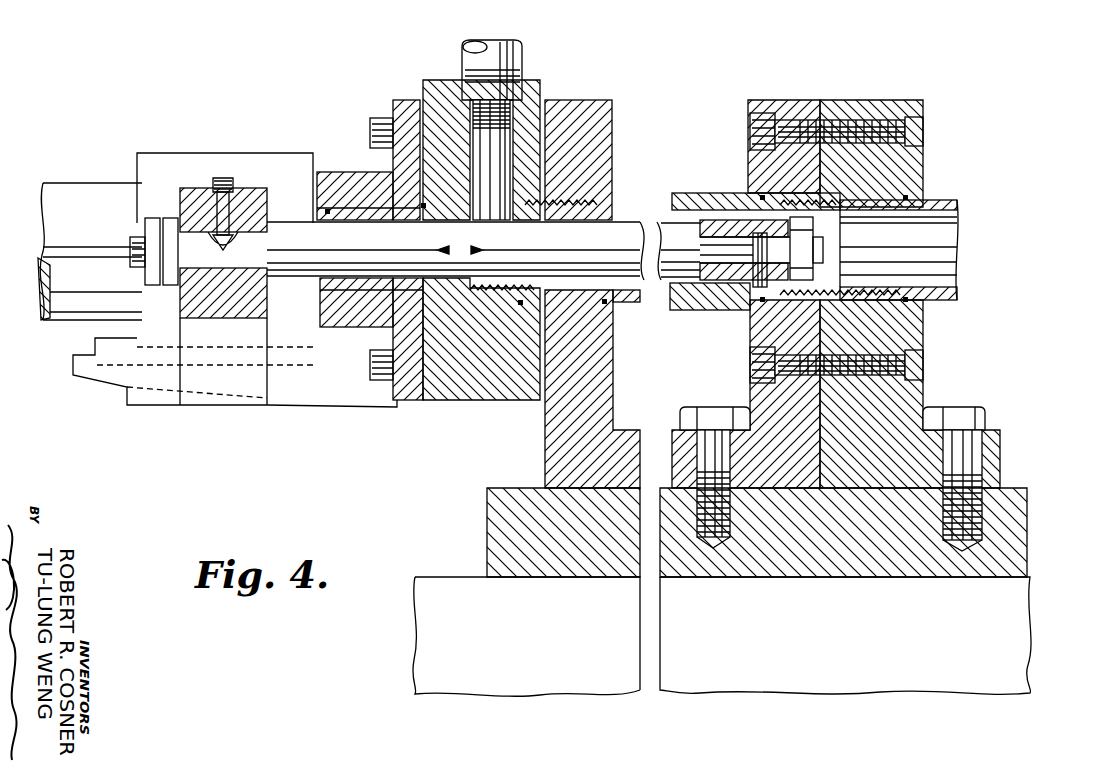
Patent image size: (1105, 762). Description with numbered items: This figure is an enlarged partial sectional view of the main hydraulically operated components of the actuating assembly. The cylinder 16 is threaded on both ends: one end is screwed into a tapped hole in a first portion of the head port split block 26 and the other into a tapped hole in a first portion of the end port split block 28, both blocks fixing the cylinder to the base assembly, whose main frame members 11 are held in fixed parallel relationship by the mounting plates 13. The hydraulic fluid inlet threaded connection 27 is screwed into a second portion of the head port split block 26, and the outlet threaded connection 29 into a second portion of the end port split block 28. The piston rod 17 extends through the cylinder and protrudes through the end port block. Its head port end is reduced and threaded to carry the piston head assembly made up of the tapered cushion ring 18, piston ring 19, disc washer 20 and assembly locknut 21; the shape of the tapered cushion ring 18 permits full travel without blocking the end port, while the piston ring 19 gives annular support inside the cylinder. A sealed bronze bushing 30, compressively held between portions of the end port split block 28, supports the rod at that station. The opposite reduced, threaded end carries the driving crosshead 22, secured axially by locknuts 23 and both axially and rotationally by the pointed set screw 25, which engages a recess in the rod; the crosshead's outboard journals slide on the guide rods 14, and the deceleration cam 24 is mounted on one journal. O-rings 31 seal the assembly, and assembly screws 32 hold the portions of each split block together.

The main frame members 11 is at (624, 675).
The mounting plates 13 is at (500, 535).
The guide rods 14 is at (92, 190).
The cylinder 16 is at (656, 268).
The piston rod 17 is at (672, 232).
The tapered cushion ring 18 is at (731, 224).
The piston ring 19 is at (757, 290).
The disc washer 20 is at (817, 262).
The assembly locknut 21 is at (803, 224).
The driving crosshead 22 is at (216, 160).
The locknuts 23 is at (168, 225).
The deceleration cam 24 is at (328, 392).
The pointed set screw 25 is at (232, 192).
The head port split block 26 is at (855, 105).
The hydraulic fluid inlet threaded connection 27 is at (883, 288).
The end port split block 28 is at (588, 105).
The outlet threaded connection 29 is at (505, 55).
The sealed bronze bushing 30 is at (353, 212).
The O-rings 31 is at (328, 210).
The assembly screws 32 is at (378, 128).